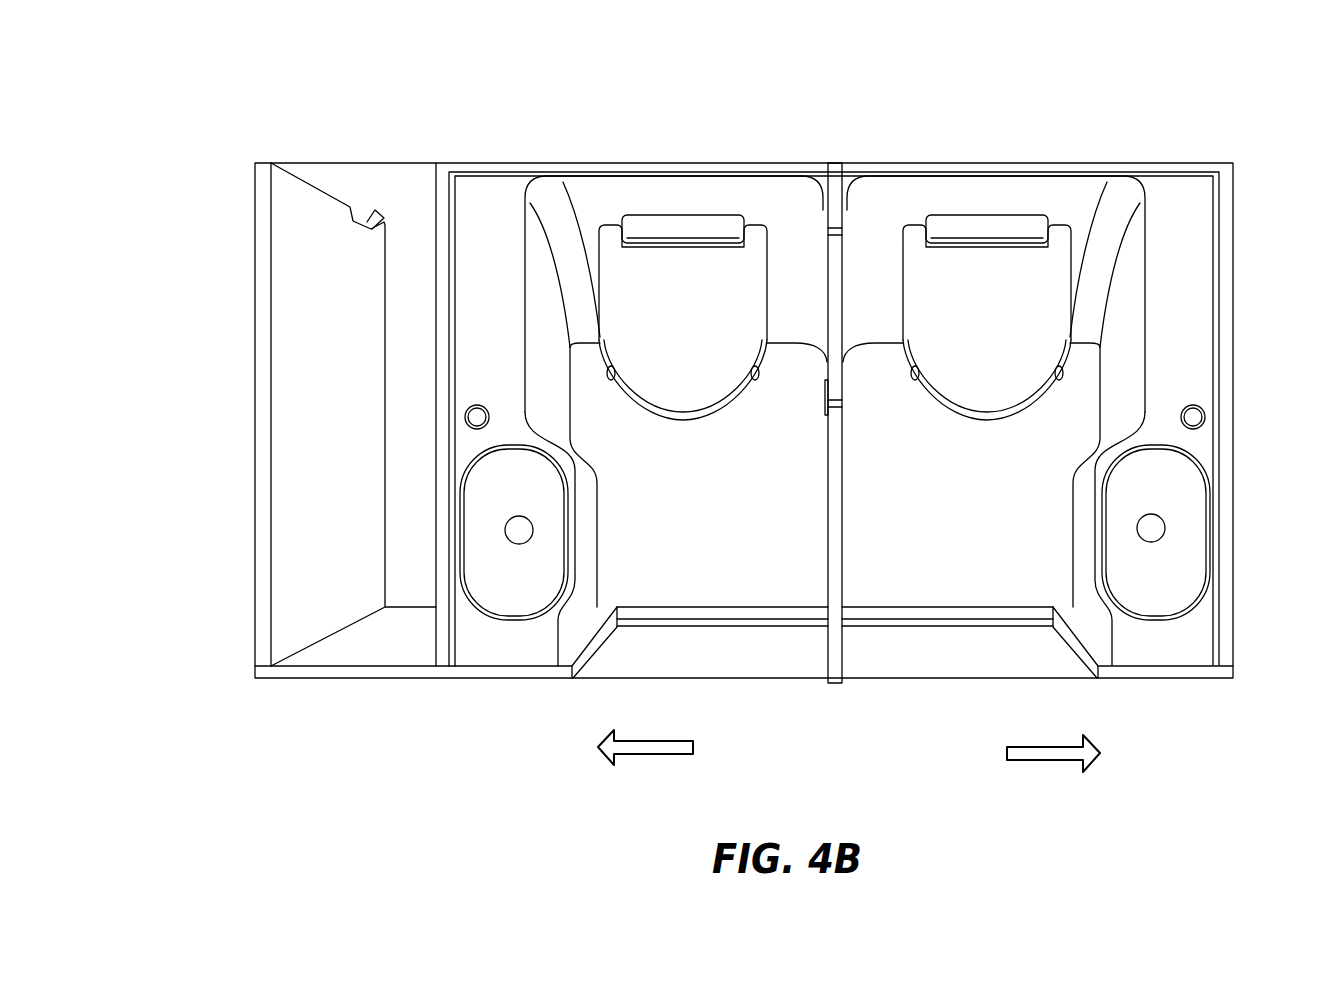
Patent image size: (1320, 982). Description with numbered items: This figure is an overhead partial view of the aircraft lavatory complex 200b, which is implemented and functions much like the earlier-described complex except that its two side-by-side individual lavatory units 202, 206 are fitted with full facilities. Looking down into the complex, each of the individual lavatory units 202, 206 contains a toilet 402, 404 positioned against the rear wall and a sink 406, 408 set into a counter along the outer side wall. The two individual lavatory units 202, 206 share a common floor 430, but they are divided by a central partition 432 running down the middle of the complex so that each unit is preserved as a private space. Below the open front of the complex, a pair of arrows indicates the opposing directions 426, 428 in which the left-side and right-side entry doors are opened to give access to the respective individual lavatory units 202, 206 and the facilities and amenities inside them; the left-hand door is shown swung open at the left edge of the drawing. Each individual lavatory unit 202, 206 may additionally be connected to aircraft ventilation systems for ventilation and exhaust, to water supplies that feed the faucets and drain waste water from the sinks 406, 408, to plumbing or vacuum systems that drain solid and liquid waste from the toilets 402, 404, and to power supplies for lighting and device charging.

The aircraft lavatory complex 200b is at (201, 71).
The individual lavatory unit 202 is at (670, 209).
The individual lavatory unit 206 is at (992, 209).
The toilet 402 is at (690, 283).
The toilet 404 is at (983, 277).
The sink 406 is at (527, 492).
The sink 408 is at (1148, 492).
The opening direction 426 is at (638, 747).
The opening direction 428 is at (1053, 753).
The common floor 430 is at (665, 517).
The central partition 432 is at (831, 642).